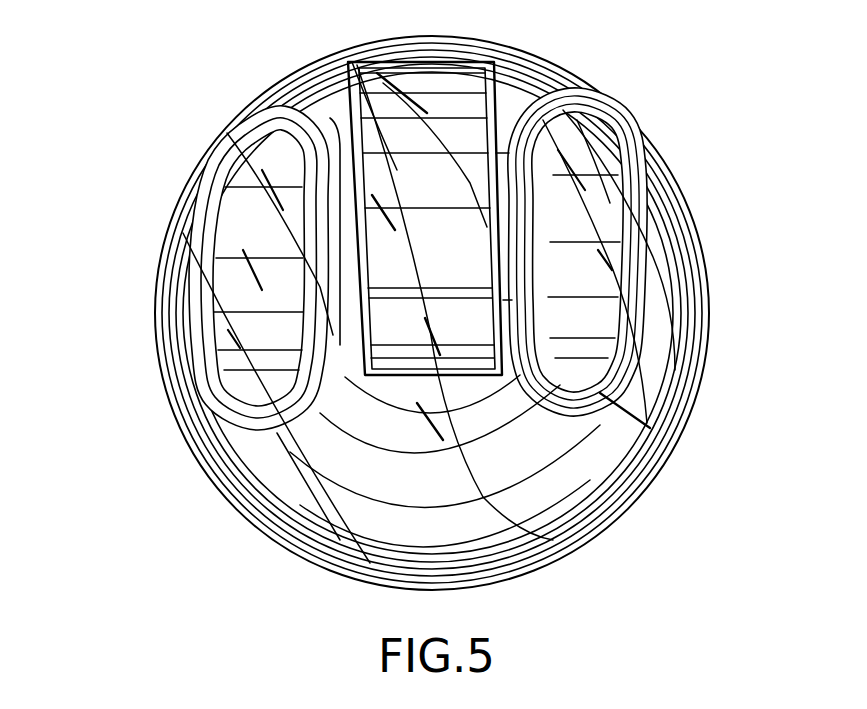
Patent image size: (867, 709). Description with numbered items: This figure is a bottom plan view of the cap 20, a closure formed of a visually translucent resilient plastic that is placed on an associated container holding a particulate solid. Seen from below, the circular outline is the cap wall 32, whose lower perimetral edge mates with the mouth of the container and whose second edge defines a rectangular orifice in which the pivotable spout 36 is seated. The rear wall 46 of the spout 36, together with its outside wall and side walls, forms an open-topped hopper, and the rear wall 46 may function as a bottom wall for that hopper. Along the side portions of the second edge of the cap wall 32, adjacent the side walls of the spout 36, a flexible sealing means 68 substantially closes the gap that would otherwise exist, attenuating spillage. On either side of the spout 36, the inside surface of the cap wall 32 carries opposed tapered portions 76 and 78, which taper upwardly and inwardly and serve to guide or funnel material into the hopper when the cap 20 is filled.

The cap 20 is at (150, 95).
The cap wall 32 is at (158, 372).
The spout 36 is at (462, 128).
The rear wall 46 is at (357, 63).
The flexible sealing means 68 is at (497, 163).
The tapered portion 76 is at (273, 337).
The tapered portion 78 is at (622, 316).